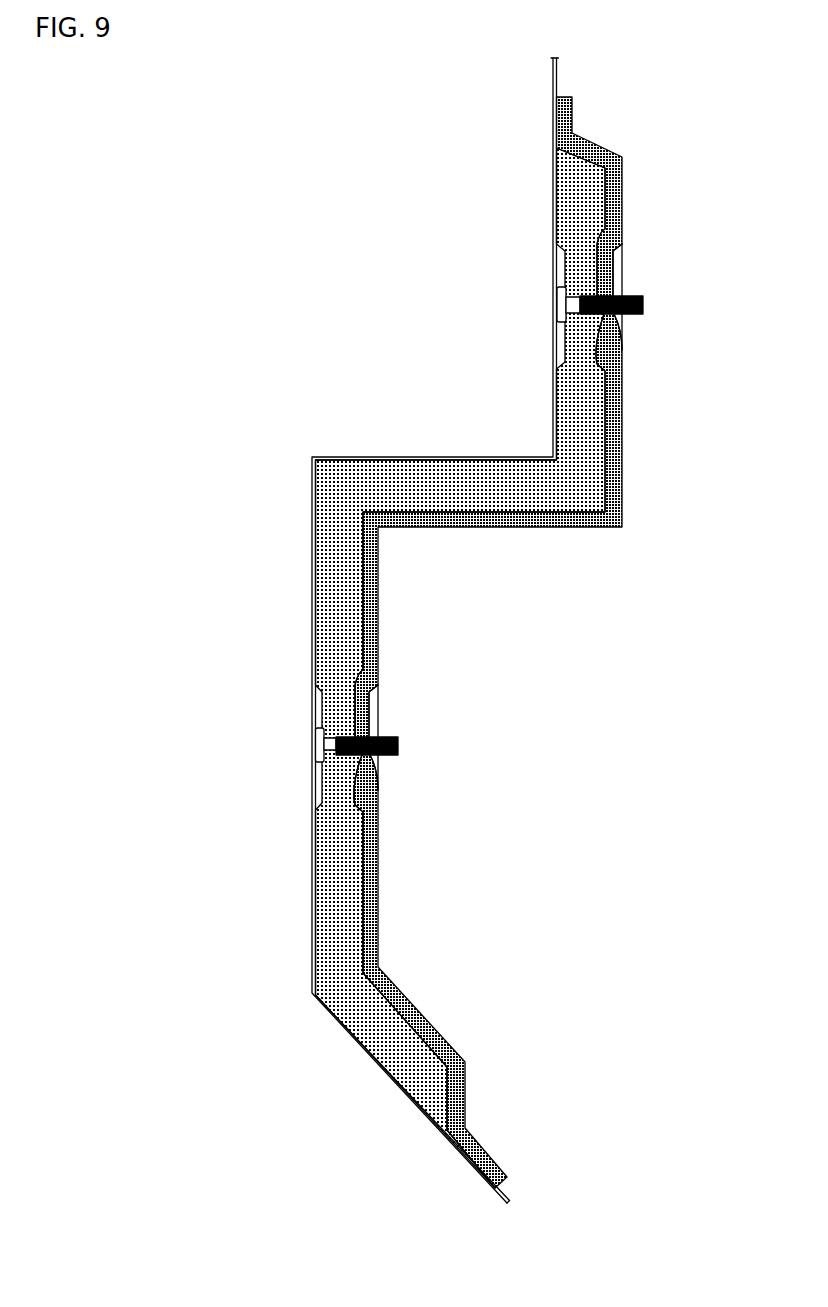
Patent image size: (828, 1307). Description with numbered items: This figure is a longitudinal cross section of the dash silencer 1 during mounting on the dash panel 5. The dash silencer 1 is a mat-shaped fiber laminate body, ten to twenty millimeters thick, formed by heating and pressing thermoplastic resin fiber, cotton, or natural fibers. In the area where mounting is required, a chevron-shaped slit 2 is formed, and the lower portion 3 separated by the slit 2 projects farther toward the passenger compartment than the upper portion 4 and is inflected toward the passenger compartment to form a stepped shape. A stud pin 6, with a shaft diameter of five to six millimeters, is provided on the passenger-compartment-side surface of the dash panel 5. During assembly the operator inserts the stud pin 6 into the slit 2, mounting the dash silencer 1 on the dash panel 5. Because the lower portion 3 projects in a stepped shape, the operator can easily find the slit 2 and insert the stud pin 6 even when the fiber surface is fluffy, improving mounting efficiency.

The dash silencer 1 is at (606, 141).
The chevron-shaped slit 2 is at (594, 313).
The lower portion 3 is at (620, 325).
The upper portion 4 is at (608, 292).
The dash panel 5 is at (549, 188).
The stud pin 6 is at (643, 308).